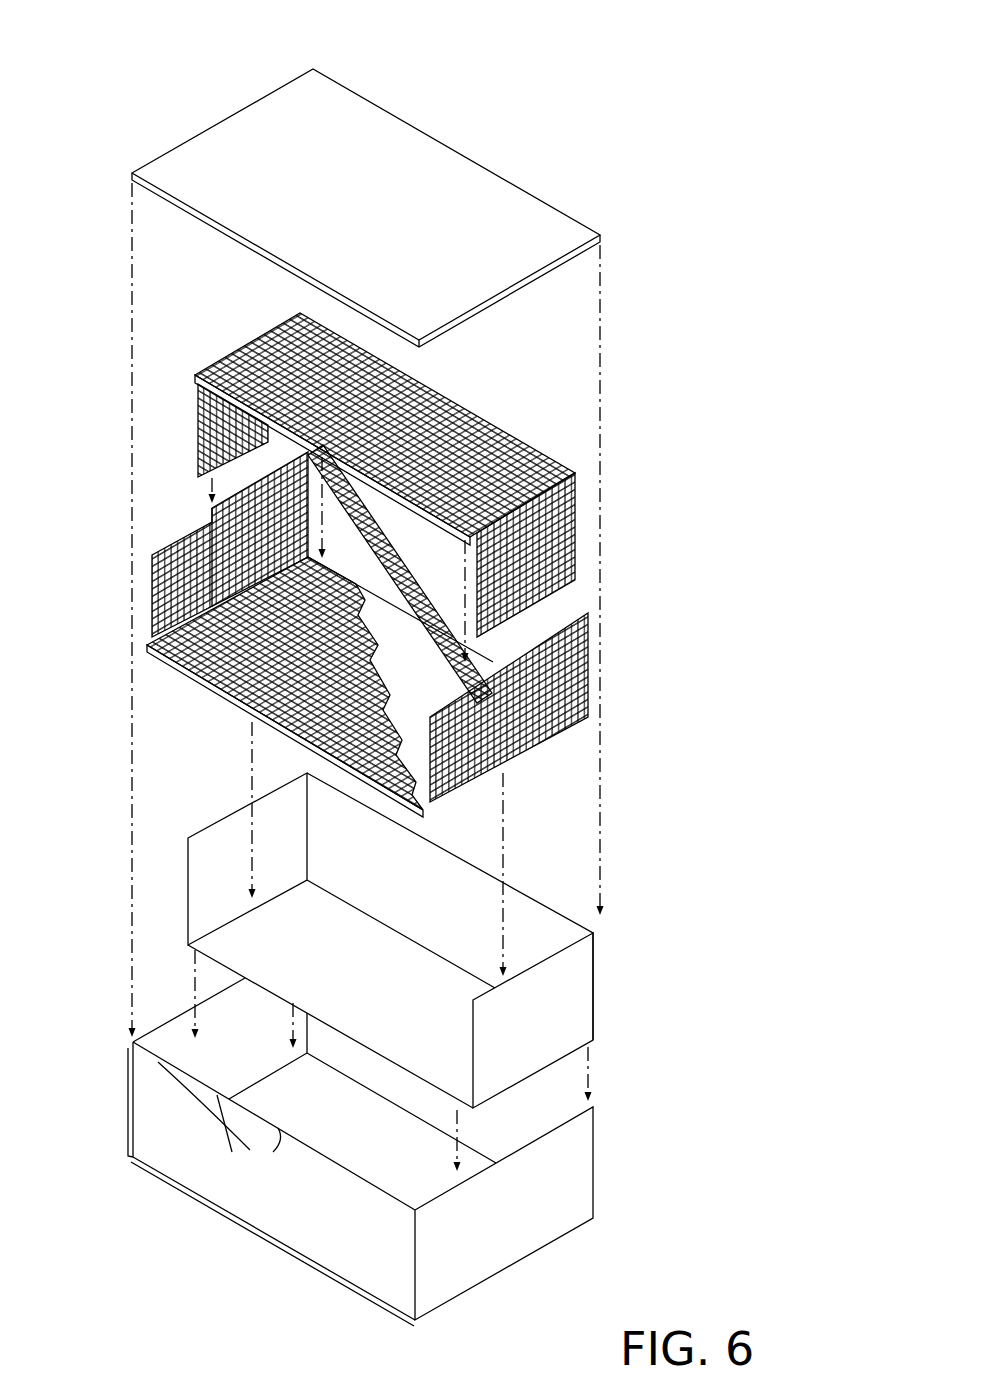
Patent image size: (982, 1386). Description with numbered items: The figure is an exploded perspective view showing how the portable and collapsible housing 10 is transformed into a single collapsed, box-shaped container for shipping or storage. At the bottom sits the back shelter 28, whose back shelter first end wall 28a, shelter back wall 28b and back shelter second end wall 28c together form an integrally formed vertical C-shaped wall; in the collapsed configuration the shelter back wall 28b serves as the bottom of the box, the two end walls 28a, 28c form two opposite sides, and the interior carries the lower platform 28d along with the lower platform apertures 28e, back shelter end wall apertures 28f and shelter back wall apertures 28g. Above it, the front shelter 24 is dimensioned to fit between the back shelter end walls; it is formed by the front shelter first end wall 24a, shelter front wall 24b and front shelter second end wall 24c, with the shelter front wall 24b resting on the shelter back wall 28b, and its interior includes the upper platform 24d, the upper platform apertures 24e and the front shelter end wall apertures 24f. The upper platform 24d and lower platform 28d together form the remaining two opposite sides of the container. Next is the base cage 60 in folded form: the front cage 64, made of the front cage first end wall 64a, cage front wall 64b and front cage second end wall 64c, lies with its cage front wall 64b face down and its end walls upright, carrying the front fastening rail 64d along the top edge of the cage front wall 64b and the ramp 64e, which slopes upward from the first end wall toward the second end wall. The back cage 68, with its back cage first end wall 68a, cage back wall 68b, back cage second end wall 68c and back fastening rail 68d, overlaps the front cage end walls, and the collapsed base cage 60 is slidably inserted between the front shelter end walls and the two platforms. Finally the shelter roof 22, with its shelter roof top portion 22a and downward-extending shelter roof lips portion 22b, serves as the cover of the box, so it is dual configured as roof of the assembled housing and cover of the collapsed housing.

The housing 10 is at (78, 56).
The shelter roof 22 is at (462, 150).
The shelter roof top portion 22a is at (335, 102).
The shelter roof lips portion 22b is at (215, 229).
The base cage 60 is at (680, 541).
The back cage 68 is at (584, 487).
The back cage first end wall 68a is at (198, 415).
The cage back wall 68b is at (437, 388).
The back cage second end wall 68c is at (572, 590).
The back fastening rail 68d is at (196, 376).
The front cage 64 is at (148, 575).
The front cage first end wall 64a is at (211, 516).
The cage front wall 64b is at (373, 716).
The front cage second end wall 64c is at (548, 735).
The front fastening rail 64d is at (204, 686).
The ramp 64e is at (362, 556).
The front shelter 24 is at (599, 988).
The front shelter first end wall 24a is at (205, 893).
The shelter front wall 24b is at (387, 985).
The front shelter second end wall 24c is at (553, 1062).
The upper platform 24d is at (460, 887).
The upper platform apertures 24e is at (440, 858).
The front shelter end wall apertures 24f is at (293, 781).
The back shelter 28 is at (599, 1170).
The back shelter first end wall 28a is at (200, 1058).
The shelter back wall 28b is at (397, 1145).
The back shelter second end wall 28c is at (520, 1258).
The lower platform 28d is at (153, 1125).
The lower platform apertures 28e is at (387, 1193).
The back shelter end wall apertures 28f is at (137, 1042).
The shelter back wall apertures 28g is at (370, 1300).